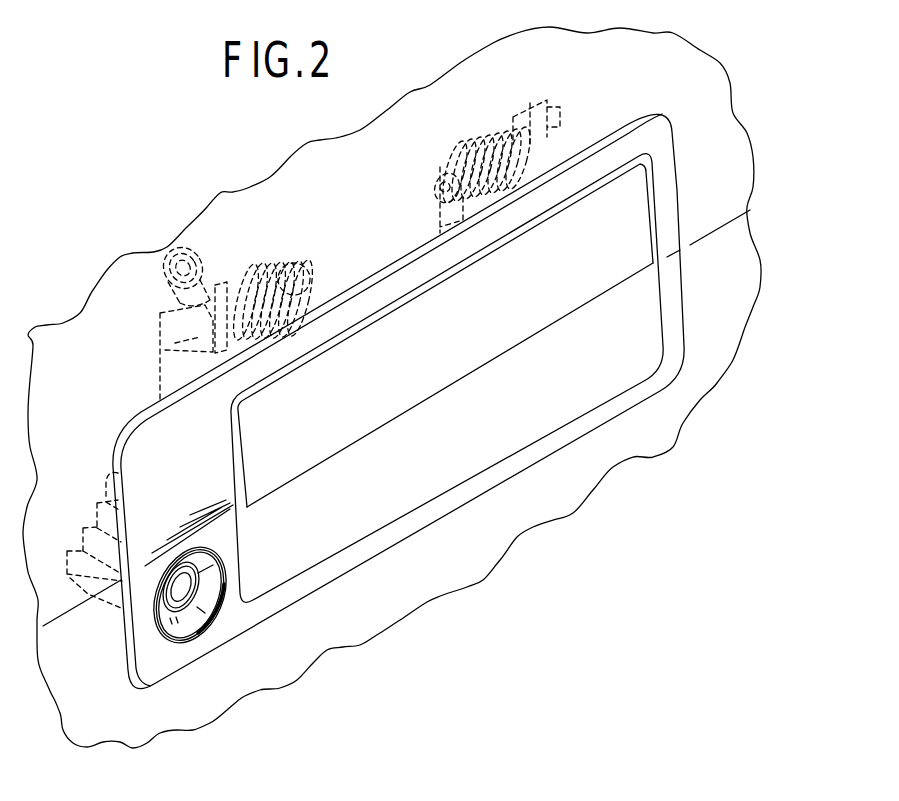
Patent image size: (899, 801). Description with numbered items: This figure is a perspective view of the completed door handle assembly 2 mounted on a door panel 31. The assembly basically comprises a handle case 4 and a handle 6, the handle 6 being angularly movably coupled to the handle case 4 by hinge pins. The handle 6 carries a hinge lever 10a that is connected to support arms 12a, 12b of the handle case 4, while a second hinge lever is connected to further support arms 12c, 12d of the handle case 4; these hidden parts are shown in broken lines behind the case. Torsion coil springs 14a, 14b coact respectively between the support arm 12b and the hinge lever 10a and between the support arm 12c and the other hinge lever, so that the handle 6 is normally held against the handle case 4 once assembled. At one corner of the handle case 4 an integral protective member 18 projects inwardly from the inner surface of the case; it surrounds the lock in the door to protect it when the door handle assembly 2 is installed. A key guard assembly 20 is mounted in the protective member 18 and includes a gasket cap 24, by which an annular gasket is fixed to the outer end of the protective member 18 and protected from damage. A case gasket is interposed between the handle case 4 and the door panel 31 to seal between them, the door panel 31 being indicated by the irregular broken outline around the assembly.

The door handle assembly 2 is at (645, 92).
The handle case 4 is at (360, 550).
The handle 6 is at (452, 367).
The hinge lever 10a is at (225, 285).
The support arm 12a is at (177, 343).
The support arm 12b is at (305, 267).
The support arm 12c is at (445, 205).
The support arm 12d is at (553, 97).
The torsion coil spring 14a is at (277, 263).
The torsion coil spring 14b is at (483, 127).
The protective member 18 is at (108, 612).
The key guard assembly 20 is at (230, 548).
The gasket cap 24 is at (206, 596).
The door panel 31 is at (200, 232).